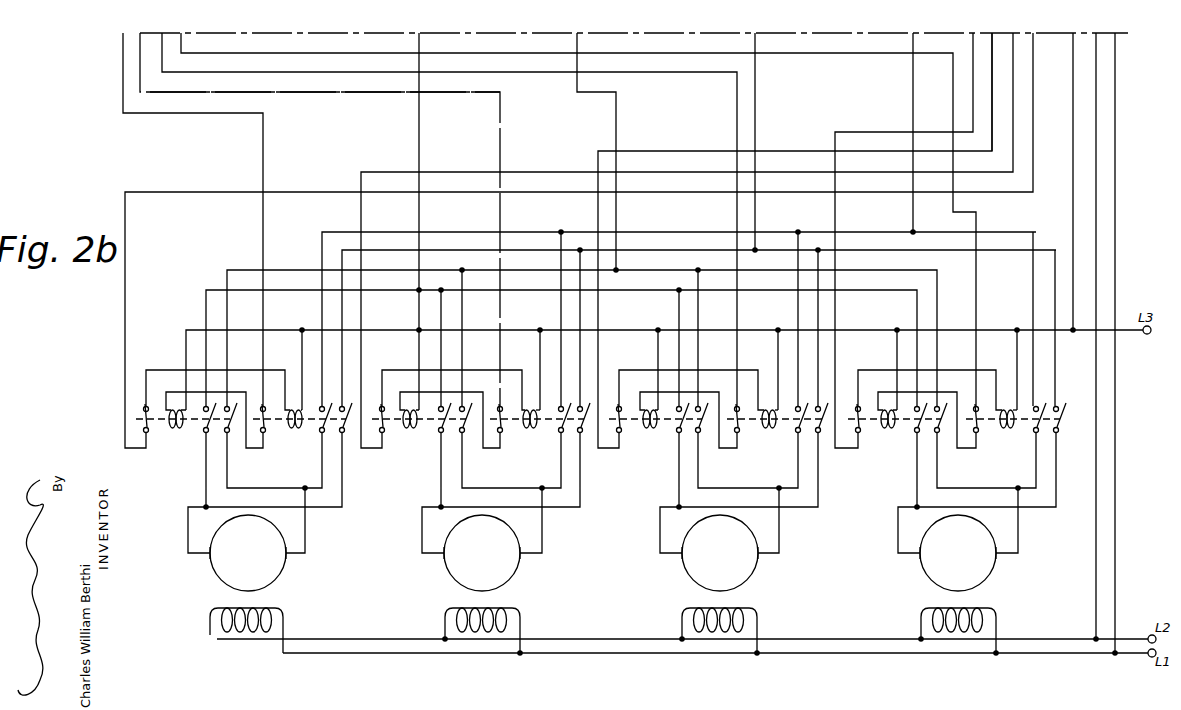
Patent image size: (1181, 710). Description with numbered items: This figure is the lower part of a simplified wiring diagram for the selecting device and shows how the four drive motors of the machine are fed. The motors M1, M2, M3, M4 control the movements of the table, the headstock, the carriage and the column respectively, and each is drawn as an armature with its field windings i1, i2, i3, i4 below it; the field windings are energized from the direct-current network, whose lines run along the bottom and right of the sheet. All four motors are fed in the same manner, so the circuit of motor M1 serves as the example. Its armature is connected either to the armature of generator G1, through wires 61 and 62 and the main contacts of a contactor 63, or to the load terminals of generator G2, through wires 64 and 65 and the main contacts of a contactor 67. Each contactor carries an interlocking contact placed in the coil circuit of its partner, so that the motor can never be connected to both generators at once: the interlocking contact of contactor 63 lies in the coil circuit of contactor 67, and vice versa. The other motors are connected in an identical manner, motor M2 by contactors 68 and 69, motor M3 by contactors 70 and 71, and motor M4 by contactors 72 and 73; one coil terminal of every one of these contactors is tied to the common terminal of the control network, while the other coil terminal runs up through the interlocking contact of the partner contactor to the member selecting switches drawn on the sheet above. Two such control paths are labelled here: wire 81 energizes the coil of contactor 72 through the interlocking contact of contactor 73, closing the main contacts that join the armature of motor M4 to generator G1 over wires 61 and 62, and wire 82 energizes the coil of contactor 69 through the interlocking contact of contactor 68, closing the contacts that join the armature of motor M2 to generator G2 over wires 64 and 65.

The wire 61 is at (428, 221).
The wire 62 is at (606, 151).
The contactor 63 is at (211, 409).
The wire 64 is at (765, 141).
The wire 65 is at (923, 132).
The contactor 67 is at (301, 425).
The contactor 68 is at (684, 409).
The contactor 69 is at (776, 425).
The contactor 70 is at (923, 409).
The contactor 71 is at (1015, 425).
The contactor 72 is at (446, 409).
The contactor 73 is at (539, 425).
The wire 81 is at (162, 92).
The wire 82 is at (992, 47).
The motor M1 is at (265, 511).
The motor M2 is at (739, 511).
The motor M3 is at (977, 511).
The motor M4 is at (501, 511).
The field windings i1 is at (254, 630).
The field windings i2 is at (727, 630).
The field windings i3 is at (966, 630).
The field windings i4 is at (490, 630).